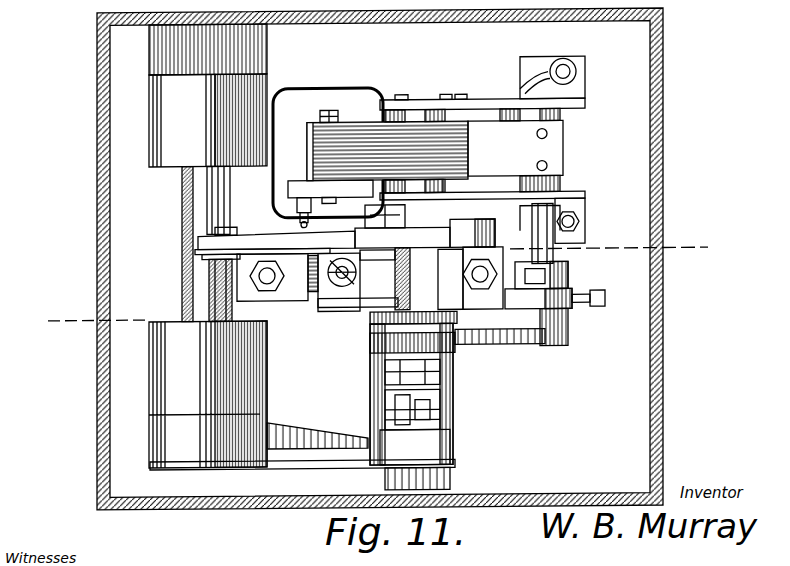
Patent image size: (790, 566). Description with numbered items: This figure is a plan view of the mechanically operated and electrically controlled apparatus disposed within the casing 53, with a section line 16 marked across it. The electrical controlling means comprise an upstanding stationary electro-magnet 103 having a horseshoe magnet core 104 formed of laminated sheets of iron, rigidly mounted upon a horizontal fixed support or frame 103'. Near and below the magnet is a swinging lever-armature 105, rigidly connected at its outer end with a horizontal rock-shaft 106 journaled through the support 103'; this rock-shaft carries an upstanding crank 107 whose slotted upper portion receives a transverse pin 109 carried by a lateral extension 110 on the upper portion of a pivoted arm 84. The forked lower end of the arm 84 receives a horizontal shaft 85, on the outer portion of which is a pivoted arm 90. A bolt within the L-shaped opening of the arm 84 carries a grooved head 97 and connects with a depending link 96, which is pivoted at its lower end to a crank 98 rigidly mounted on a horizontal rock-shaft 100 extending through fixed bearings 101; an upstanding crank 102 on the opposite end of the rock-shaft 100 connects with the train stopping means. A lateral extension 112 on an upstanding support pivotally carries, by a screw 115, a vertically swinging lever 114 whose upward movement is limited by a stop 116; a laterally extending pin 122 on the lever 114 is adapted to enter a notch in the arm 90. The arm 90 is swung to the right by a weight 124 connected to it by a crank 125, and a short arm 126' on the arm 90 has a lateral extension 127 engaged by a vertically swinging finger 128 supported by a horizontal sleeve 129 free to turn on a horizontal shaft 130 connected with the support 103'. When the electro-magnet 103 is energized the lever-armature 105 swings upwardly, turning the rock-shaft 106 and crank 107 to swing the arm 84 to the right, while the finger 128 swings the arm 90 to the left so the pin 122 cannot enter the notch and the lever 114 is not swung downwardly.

The casing 53 is at (97, 208).
The section line 16— 16 is at (377, 287).
The upstanding crank 102 is at (232, 52).
The fixed bearings 101 is at (208, 271).
The horizontal rock-shaft 100 is at (193, 212).
The lateral extension 112 is at (257, 233).
The stop 116 is at (275, 245).
The screw 115 is at (217, 263).
The pivoted arm 90 is at (360, 263).
The vertically swinging lever 114 is at (355, 282).
The laterally extending pin 122 is at (358, 283).
The electro-magnet 103 is at (328, 141).
The horseshoe magnet core 104 is at (418, 138).
The horizontal shaft 130 is at (398, 107).
The horizontal fixed support or frame 103' is at (507, 150).
The swinging lever-armature 105 is at (515, 148).
The lateral extension 127 is at (362, 223).
The horizontal sleeve 129 is at (403, 191).
The vertically swinging finger 128 is at (407, 215).
The short arm 126' is at (402, 268).
The weight 124 is at (447, 248).
The crank 125 is at (470, 278).
The horizontal rock-shaft 106 is at (555, 258).
The transverse pin 109 is at (567, 277).
The upstanding crank 107 is at (572, 310).
The lateral extension 110 is at (498, 347).
The grooved head 97 is at (372, 320).
The pivoted arm 84 is at (372, 338).
The horizontal shaft 85 is at (452, 383).
The depending link 96 is at (453, 410).
The crank 98 is at (310, 437).